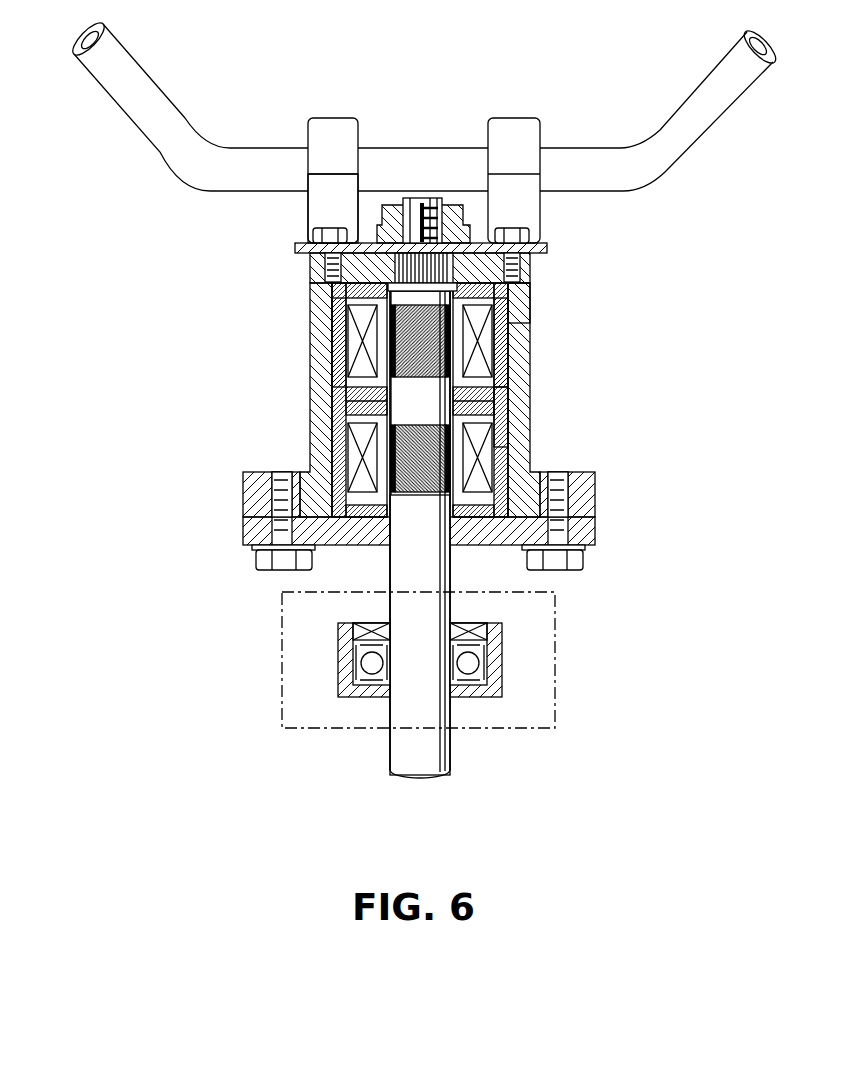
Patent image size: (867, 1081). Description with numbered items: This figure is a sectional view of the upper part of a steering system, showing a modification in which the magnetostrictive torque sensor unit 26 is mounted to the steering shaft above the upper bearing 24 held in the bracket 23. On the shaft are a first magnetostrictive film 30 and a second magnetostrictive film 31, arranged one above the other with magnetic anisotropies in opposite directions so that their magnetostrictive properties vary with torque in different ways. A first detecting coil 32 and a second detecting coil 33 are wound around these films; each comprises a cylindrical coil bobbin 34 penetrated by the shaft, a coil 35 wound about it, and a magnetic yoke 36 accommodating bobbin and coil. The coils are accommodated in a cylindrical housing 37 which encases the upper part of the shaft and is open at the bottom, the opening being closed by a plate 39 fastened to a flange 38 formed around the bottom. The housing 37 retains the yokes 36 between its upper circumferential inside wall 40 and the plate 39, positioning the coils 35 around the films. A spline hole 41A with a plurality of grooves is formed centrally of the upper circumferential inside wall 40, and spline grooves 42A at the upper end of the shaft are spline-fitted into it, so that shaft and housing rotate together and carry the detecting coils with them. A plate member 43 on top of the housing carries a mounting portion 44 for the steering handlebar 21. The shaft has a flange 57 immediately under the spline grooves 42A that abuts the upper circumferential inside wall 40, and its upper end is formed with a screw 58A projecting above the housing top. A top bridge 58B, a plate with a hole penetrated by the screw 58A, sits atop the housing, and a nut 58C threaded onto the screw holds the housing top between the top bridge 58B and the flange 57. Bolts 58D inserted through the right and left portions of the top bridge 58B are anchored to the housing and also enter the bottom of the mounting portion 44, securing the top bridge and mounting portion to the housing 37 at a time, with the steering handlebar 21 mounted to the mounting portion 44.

The steering handlebar 21 is at (130, 90).
The bracket 23 is at (555, 675).
The upper bearing 24 is at (338, 660).
The magnetostrictive torque sensor unit 26 is at (660, 256).
The first magnetostrictive film 30 is at (417, 348).
The second magnetostrictive film 31 is at (400, 452).
The first detecting coil 32 is at (530, 295).
The second detecting coil 33 is at (520, 420).
The coil bobbin 34 is at (487, 385).
The coil 35 is at (492, 346).
The magnetic yoke 36 is at (336, 327).
The housing 37 is at (310, 290).
The flange 38 is at (597, 510).
The plate 39 is at (598, 540).
The upper circumferential inside wall 40 is at (518, 297).
The spline hole 41A is at (452, 320).
The spline grooves 42A is at (413, 263).
The plate member 43 is at (355, 243).
The mounting portion 44 is at (325, 118).
The flange 57 is at (455, 320).
The screw 58A is at (427, 210).
The top bridge 58B is at (300, 243).
The nut 58C is at (397, 212).
The bolt 58D is at (318, 227).